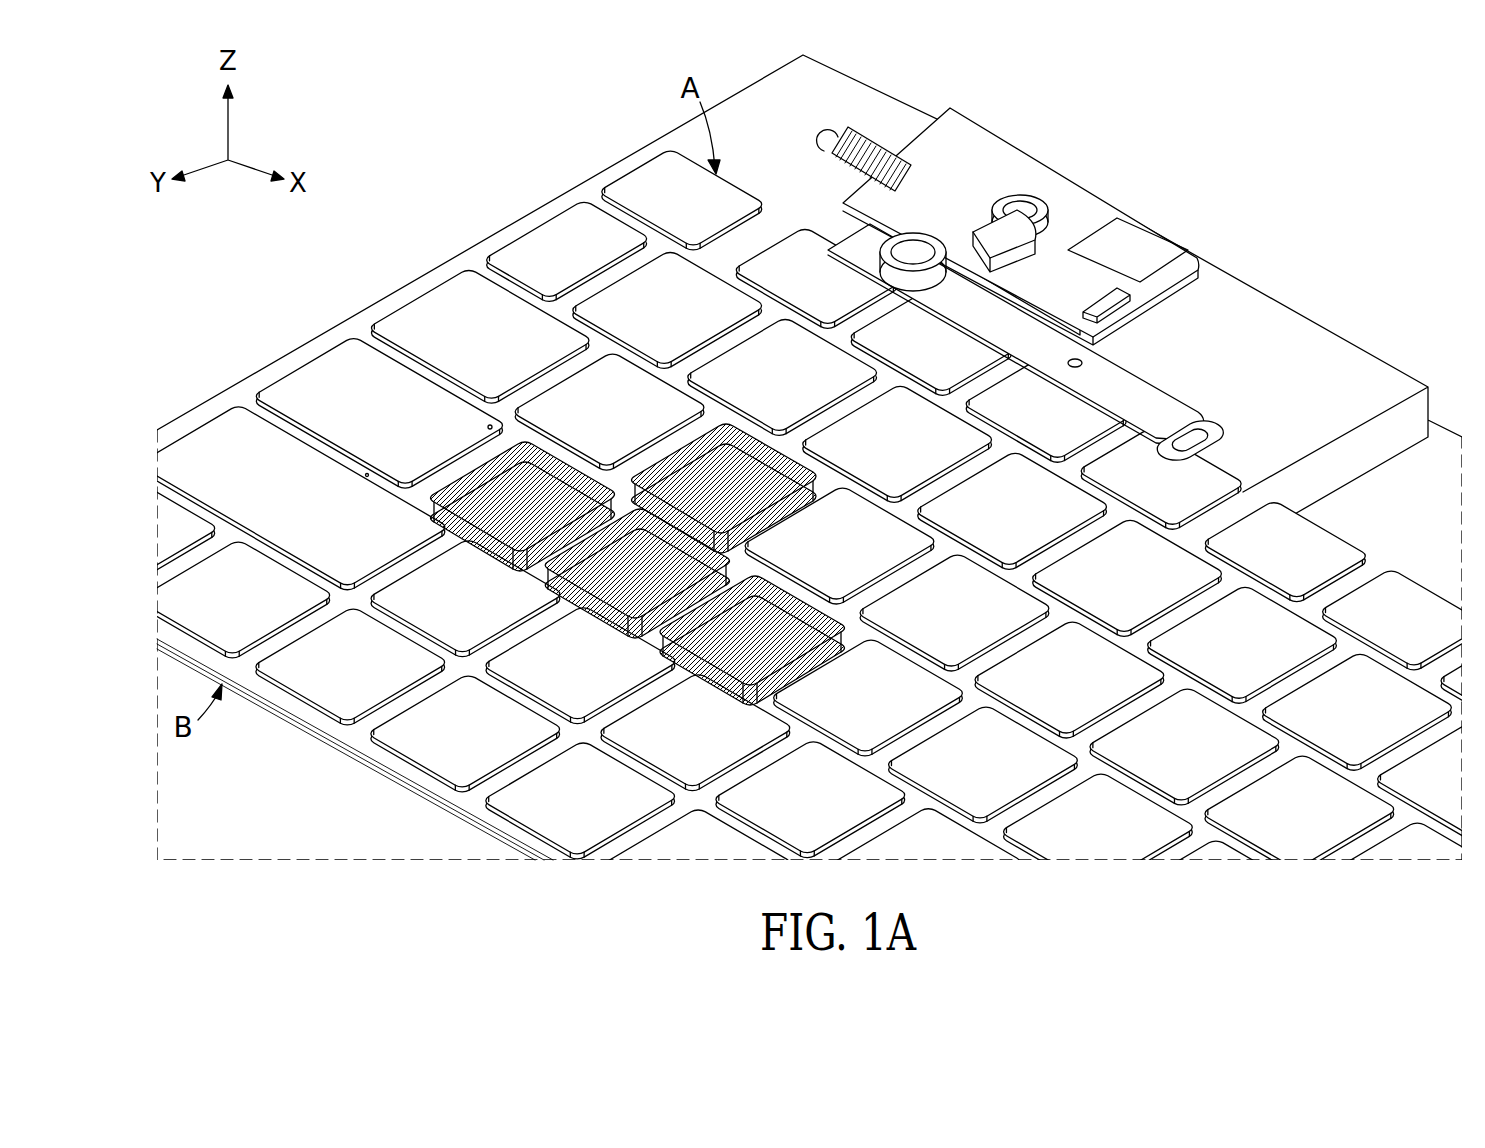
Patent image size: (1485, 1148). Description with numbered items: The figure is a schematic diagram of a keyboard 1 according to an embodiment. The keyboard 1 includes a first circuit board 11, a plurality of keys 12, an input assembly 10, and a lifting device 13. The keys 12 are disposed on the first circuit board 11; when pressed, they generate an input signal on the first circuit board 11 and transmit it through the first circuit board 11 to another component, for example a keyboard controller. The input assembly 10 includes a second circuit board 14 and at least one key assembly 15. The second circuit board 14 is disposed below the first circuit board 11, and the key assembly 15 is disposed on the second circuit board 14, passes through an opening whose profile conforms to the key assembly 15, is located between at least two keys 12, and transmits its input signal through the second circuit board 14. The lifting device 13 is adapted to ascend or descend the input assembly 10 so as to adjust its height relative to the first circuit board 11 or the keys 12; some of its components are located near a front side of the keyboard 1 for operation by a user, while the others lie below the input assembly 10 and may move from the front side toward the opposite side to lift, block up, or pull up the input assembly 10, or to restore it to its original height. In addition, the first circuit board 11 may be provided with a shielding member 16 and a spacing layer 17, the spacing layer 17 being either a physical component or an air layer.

The keyboard 1 is at (443, 297).
The input assembly 10 is at (481, 472).
The first circuit board 11 is at (173, 657).
The keys 12 is at (1240, 630).
The lifting device 13 is at (946, 188).
The second circuit board 14 is at (628, 505).
The key assembly 15 is at (720, 480).
The shielding member 16 is at (160, 639).
The spacing layer 17 is at (160, 644).